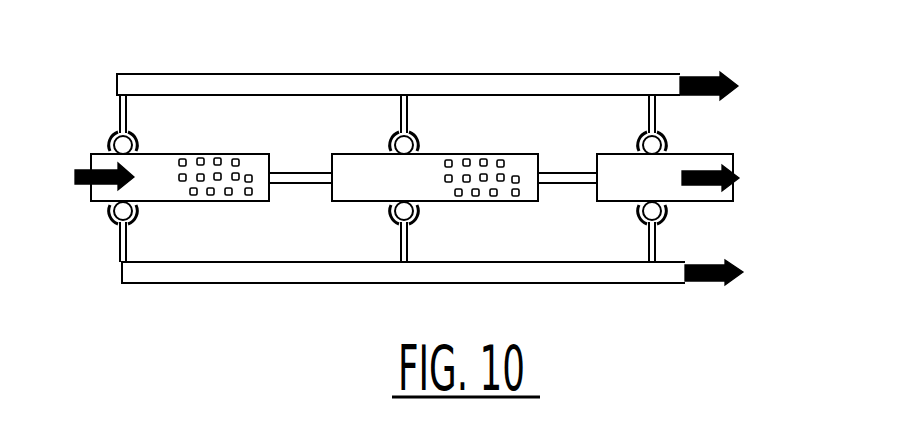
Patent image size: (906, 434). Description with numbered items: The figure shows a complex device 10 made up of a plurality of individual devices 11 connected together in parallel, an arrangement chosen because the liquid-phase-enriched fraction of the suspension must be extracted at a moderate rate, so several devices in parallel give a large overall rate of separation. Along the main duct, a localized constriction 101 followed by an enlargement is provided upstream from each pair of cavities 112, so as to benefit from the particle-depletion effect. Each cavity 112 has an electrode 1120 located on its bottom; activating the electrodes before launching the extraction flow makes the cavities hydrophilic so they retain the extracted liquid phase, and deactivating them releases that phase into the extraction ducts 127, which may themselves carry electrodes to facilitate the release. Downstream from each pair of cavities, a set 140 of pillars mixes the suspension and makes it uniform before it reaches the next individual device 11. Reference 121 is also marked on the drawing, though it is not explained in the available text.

The complex device 10 is at (147, 298).
The individual device 11 is at (212, 154).
The localized constriction 101 is at (290, 183).
The cavity 112 is at (398, 223).
The outlet pipe 121 is at (410, 223).
The extraction duct 127 is at (680, 75).
The set of pillars 140 is at (218, 180).
The electrode 1120 is at (137, 217).